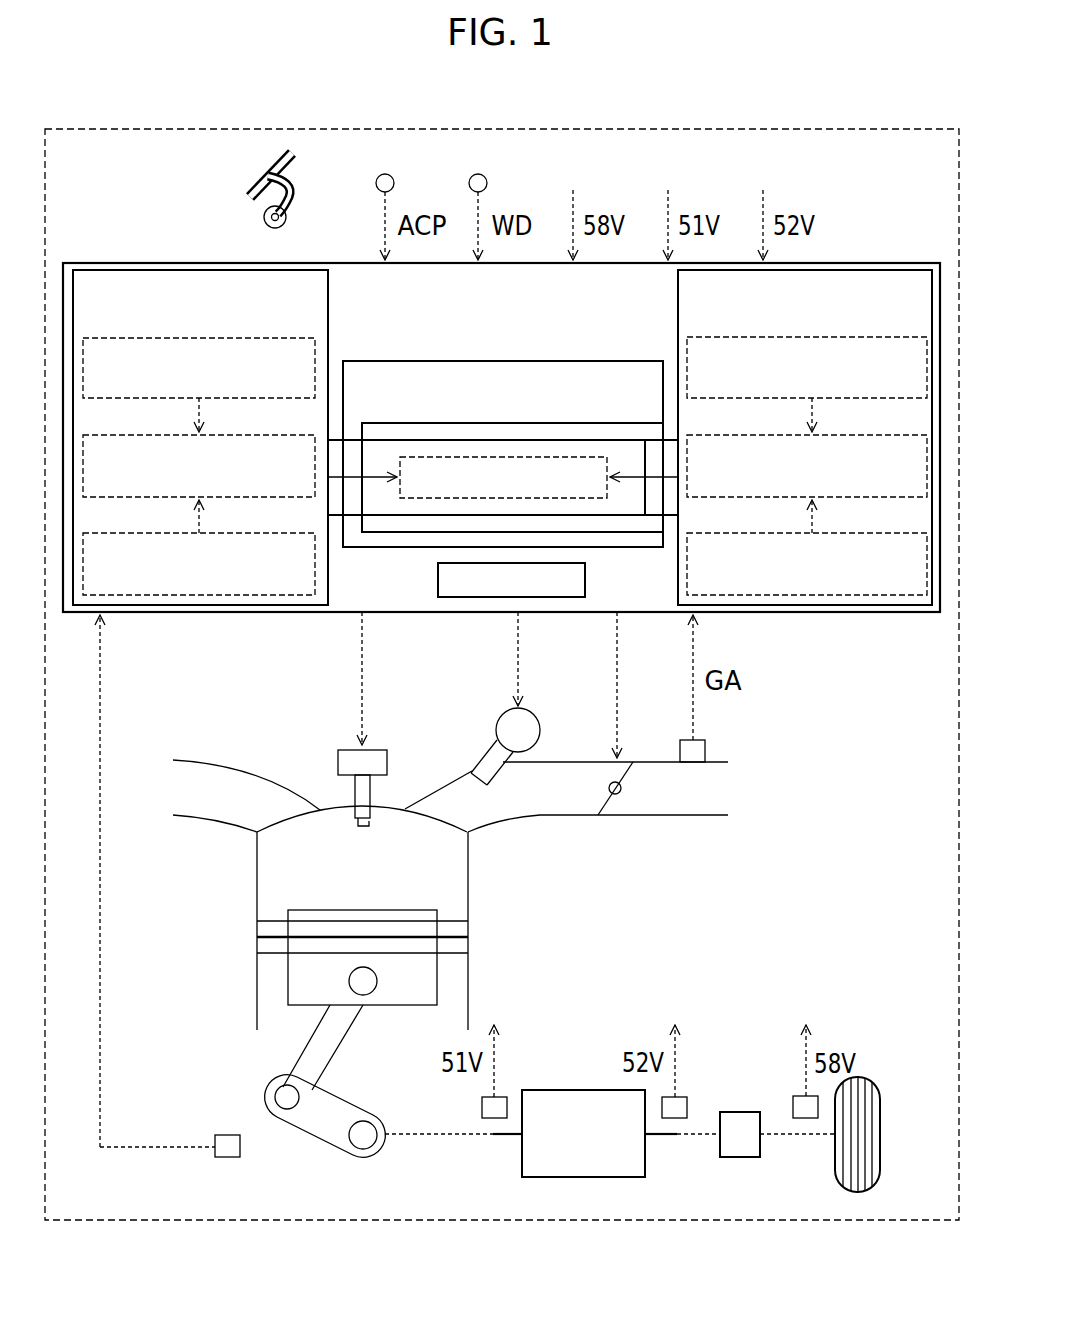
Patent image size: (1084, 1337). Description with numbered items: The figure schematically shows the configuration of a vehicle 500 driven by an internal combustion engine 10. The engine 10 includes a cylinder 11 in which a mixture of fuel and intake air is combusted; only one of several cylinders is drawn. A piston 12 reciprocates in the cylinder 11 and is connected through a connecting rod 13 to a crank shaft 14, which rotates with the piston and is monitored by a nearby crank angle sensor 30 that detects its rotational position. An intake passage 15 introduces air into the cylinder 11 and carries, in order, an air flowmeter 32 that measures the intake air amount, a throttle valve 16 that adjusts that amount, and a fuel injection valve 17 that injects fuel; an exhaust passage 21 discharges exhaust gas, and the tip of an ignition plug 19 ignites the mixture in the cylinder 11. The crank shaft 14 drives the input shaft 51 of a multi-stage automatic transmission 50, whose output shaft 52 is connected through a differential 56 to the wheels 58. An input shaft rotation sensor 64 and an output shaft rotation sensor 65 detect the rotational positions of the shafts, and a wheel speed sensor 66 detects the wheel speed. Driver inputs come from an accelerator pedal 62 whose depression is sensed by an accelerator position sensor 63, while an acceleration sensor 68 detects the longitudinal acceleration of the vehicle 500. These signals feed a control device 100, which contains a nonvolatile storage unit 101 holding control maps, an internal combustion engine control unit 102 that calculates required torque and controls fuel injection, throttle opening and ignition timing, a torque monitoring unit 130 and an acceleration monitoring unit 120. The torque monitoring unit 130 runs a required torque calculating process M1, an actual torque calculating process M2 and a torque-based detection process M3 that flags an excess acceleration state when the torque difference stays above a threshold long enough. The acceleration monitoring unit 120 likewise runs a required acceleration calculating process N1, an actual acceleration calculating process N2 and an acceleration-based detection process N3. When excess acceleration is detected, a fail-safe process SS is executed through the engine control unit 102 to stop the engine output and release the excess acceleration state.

The vehicle 500 is at (737, 129).
The control device 100 is at (850, 263).
The torque monitoring unit 130 is at (328, 335).
The acceleration monitoring unit 120 is at (678, 333).
The internal combustion engine control unit 102 is at (483, 361).
The storage unit 101 is at (585, 580).
The required torque calculating process M1 is at (255, 338).
The actual torque calculating process M2 is at (255, 533).
The torque-based detection process M3 is at (255, 435).
The required acceleration calculating process N1 is at (868, 337).
The actual acceleration calculating process N2 is at (868, 533).
The acceleration-based detection process N3 is at (868, 435).
The fail-safe process SS is at (433, 498).
The accelerator pedal 62 is at (267, 170).
The accelerator position sensor 63 is at (392, 176).
The acceleration sensor 68 is at (485, 176).
The internal combustion engine 10 is at (255, 720).
The cylinder 11 is at (470, 962).
The piston 12 is at (438, 992).
The connecting rod 13 is at (332, 1042).
The crank shaft 14 is at (383, 1117).
The intake passage 15 is at (673, 815).
The throttle valve 16 is at (632, 770).
The fuel injection valve 17 is at (493, 777).
The ignition plug 19 is at (372, 790).
The exhaust passage 21 is at (190, 818).
The crank angle sensor 30 is at (228, 1157).
The air flowmeter 32 is at (706, 751).
The automatic transmission 50 is at (582, 1090).
The input shaft 51 is at (512, 1138).
The output shaft 52 is at (660, 1138).
The differential 56 is at (745, 1112).
The wheel 58 is at (880, 1153).
The input shaft rotation sensor 64 is at (497, 1095).
The output shaft rotation sensor 65 is at (678, 1095).
The wheel speed sensor 66 is at (800, 1095).